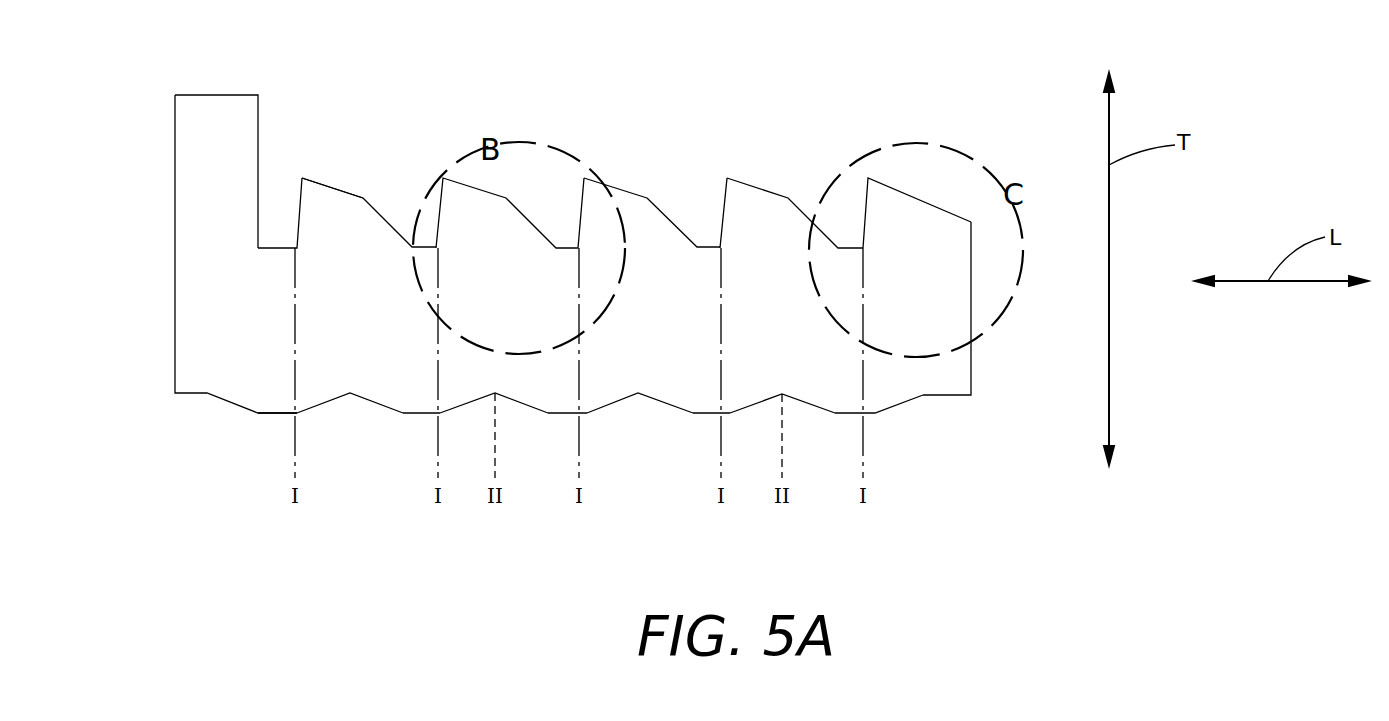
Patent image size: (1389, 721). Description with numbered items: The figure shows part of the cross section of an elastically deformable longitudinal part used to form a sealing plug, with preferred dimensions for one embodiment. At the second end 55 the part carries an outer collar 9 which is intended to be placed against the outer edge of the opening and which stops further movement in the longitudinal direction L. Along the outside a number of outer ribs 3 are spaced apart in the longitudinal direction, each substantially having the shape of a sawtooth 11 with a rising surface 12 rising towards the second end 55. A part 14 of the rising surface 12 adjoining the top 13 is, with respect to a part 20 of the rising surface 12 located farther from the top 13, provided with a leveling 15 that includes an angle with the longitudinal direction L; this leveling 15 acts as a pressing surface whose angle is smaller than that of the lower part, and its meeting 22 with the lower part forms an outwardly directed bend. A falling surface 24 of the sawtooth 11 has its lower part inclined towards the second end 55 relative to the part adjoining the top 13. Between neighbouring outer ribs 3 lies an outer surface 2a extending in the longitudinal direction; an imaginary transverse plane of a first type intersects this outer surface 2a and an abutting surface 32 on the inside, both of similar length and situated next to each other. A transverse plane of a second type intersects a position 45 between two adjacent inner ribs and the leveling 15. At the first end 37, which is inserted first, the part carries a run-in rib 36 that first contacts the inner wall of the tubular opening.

The outer surface 2a is at (700, 247).
The outer ribs 3 is at (507, 136).
The outer collar 9 is at (187, 95).
The sawtooth 11 is at (338, 190).
The rising surface 12 is at (813, 222).
The top 13 is at (725, 178).
The part of the rising surface 14 is at (378, 116).
The leveling 15 is at (327, 187).
The part of the rising surface 20 is at (390, 225).
The meeting 22 is at (365, 195).
The falling surface 24 is at (301, 197).
The abutting surface 32 is at (422, 413).
The run-in rib 36 is at (928, 198).
The first end 37 is at (972, 318).
The position between two adjacent inner ribs 45 is at (495, 395).
The second end 55 is at (188, 315).